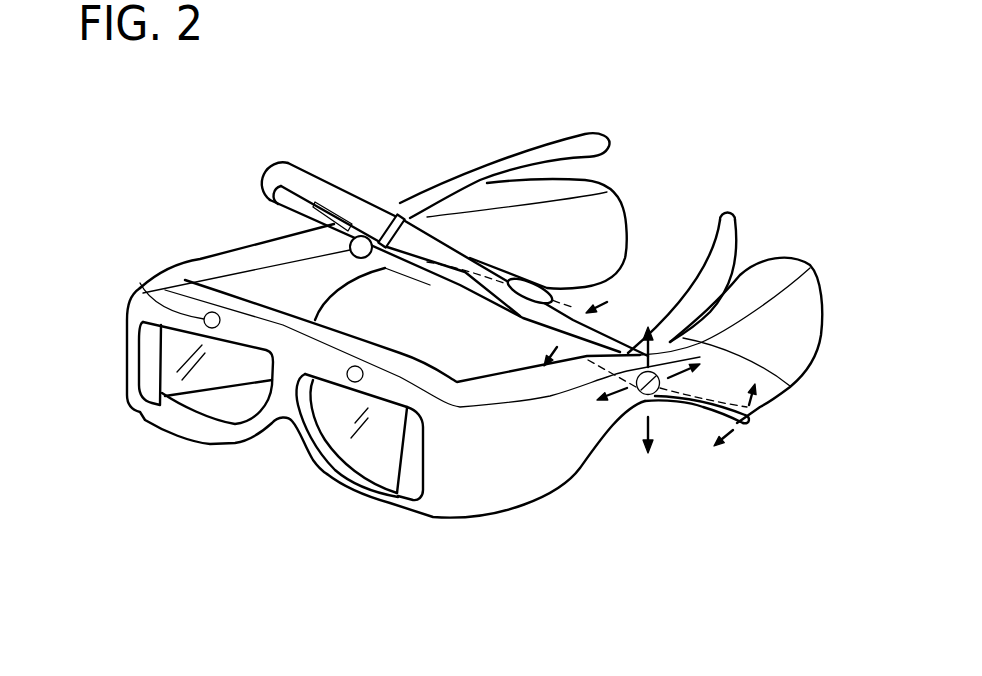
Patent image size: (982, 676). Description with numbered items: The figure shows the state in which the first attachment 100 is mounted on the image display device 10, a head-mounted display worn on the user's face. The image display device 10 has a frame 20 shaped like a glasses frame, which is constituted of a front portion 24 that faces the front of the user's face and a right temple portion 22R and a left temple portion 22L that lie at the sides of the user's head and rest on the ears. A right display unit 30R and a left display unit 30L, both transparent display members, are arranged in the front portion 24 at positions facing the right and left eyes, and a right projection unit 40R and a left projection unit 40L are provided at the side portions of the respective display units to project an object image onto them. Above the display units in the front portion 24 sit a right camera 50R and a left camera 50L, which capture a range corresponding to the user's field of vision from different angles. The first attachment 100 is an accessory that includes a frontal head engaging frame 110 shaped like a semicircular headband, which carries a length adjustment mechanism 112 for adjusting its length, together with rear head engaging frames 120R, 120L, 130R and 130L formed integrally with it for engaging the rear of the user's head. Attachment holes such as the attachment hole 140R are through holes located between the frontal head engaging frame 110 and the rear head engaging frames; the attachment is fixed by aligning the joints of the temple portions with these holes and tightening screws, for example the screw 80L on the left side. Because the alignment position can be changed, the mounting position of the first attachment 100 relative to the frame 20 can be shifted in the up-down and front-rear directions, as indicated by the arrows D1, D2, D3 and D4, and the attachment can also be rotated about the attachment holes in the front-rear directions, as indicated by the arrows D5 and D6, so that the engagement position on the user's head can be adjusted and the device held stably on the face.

The image display device 10 is at (132, 269).
The frame 20 is at (192, 272).
The right temple portion 22R is at (593, 178).
The left temple portion 22L is at (799, 256).
The front portion 24 is at (433, 519).
The right display unit 30R is at (230, 404).
The left display unit 30L is at (350, 458).
The right projection unit 40R is at (152, 390).
The left projection unit 40L is at (410, 487).
The right camera 50R is at (140, 283).
The left camera 50L is at (365, 368).
The screw 80L is at (658, 394).
The first attachment 100 is at (337, 152).
The frontal head engaging frame 110 is at (296, 164).
The length adjustment mechanism 112 is at (400, 214).
The rear head engaging frame 120R is at (583, 132).
The rear head engaging frame 120L is at (726, 212).
The rear head engaging frame 130R is at (548, 294).
The rear head engaging frame 130L is at (741, 427).
The attachment hole 140R is at (347, 258).
The arrow D1 is at (658, 343).
The arrow D2 is at (656, 456).
The arrow D3 is at (626, 392).
The arrow D4 is at (670, 382).
The arrow D5 is at (556, 347).
The arrow D6 is at (608, 303).